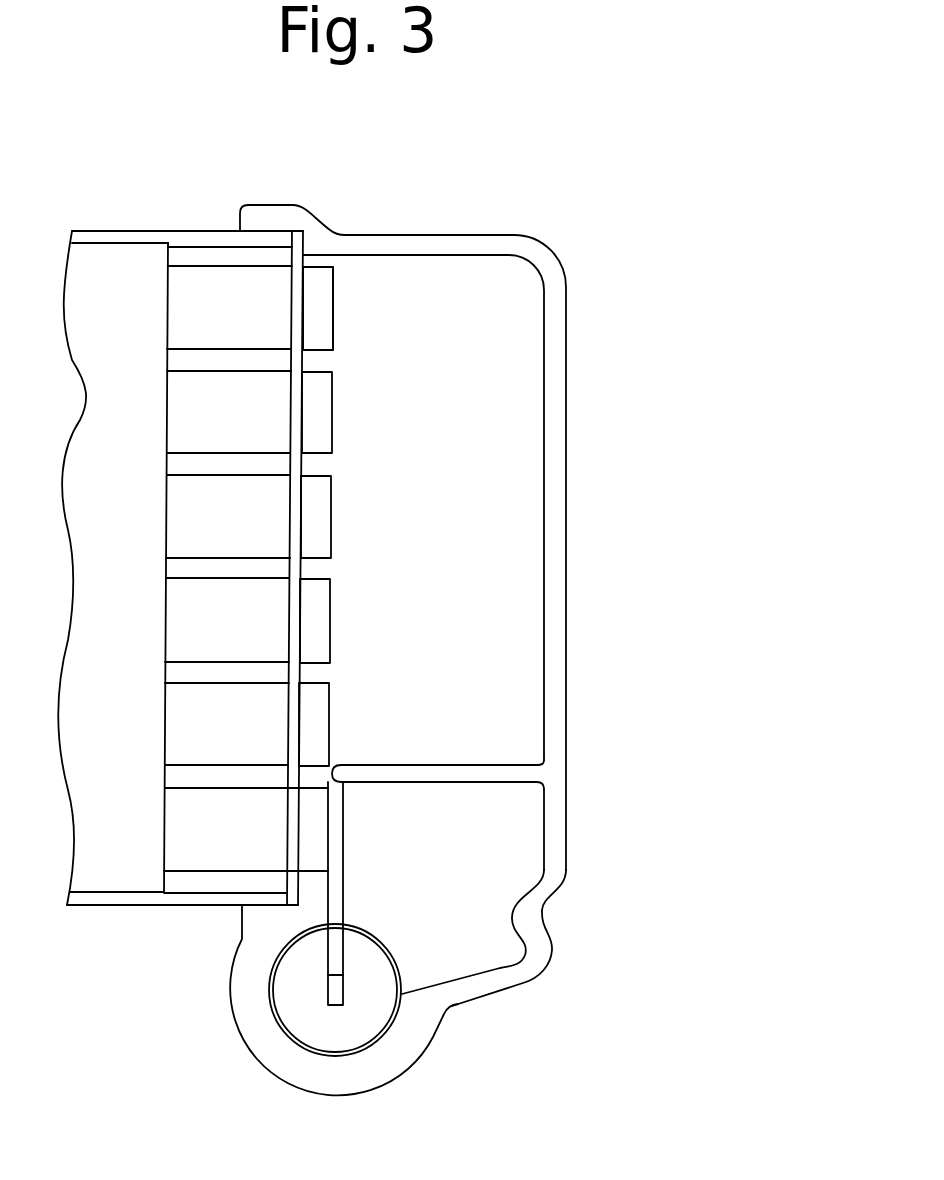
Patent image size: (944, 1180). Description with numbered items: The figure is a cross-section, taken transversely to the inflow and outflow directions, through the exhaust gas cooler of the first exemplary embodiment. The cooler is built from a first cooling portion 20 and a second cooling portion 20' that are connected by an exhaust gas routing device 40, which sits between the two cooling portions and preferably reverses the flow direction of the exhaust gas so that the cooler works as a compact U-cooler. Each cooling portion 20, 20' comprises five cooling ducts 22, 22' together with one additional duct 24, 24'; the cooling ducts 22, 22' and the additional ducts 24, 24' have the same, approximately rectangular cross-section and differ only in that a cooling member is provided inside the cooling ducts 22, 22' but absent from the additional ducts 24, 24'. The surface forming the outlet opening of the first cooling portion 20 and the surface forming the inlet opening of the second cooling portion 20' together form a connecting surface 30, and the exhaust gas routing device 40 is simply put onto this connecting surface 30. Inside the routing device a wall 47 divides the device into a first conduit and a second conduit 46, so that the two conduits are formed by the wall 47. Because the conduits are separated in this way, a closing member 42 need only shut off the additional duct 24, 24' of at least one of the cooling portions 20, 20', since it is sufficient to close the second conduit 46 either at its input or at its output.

The first cooling portion 20 is at (180, 517).
The second cooling portion 20' is at (180, 517).
The cooling duct 22 is at (521, 516).
The cooling duct 22' is at (521, 516).
The additional duct 24 is at (451, 829).
The additional duct 24' is at (451, 829).
The connecting surface 30 is at (335, 320).
The exhaust gas routing device 40 is at (558, 255).
The closing member 42 is at (337, 867).
The second conduit 46 is at (447, 895).
The wall 47 is at (535, 775).